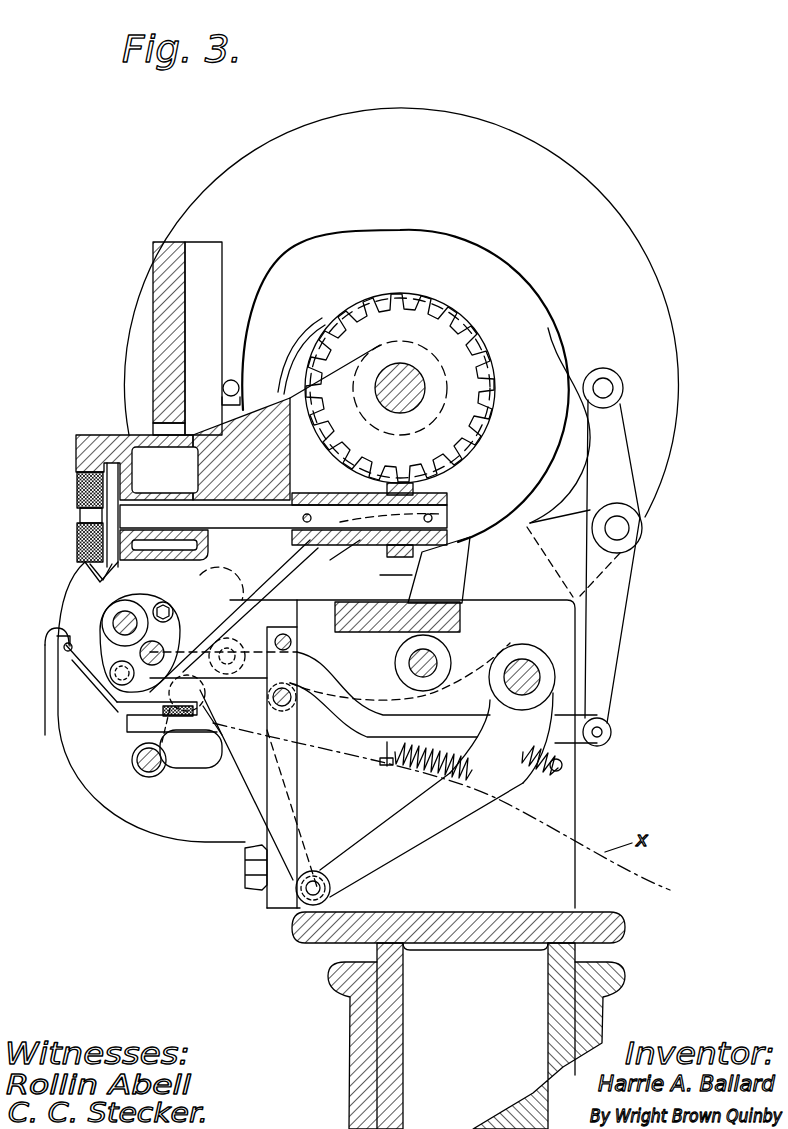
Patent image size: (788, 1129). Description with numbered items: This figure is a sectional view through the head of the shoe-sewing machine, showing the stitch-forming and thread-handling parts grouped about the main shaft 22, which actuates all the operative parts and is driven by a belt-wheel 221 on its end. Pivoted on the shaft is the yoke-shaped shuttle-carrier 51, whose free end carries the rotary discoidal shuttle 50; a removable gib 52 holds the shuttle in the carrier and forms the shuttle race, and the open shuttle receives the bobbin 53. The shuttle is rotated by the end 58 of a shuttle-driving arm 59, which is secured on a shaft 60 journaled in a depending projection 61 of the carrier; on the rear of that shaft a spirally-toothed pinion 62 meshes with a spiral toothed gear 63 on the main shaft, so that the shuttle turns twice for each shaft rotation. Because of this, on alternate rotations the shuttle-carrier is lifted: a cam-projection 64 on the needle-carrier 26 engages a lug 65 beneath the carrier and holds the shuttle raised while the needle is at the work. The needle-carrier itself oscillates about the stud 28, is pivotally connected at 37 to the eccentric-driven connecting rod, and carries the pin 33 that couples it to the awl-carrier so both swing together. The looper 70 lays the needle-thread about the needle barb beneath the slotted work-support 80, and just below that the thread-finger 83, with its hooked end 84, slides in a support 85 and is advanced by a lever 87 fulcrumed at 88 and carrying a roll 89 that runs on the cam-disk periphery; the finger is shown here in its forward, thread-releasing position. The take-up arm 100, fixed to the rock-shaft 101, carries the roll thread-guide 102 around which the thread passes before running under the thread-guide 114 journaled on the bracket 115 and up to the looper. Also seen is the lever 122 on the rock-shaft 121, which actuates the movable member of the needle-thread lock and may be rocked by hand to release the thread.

The belt-wheel 221 is at (605, 217).
The main shaft 22 is at (405, 390).
The spiral toothed gear 63 is at (470, 384).
The roll 89 is at (623, 381).
The fulcrum 88 is at (630, 528).
The lever 87 is at (607, 606).
The shuttle-carrier 51 is at (117, 433).
The removable gib 52 is at (78, 437).
The shuttle 50 is at (77, 472).
The bobbin 53 is at (88, 536).
The end of shuttle-driving arm 58 is at (95, 580).
The shuttle-driving arm 59 is at (110, 537).
The shaft 60 is at (250, 510).
The spirally-toothed pinion 62 is at (420, 497).
The depending projection 61 is at (344, 548).
The lever 122 is at (445, 577).
The lug 65 is at (140, 562).
The cam-projection 64 is at (173, 612).
The stud 28 is at (120, 618).
The work-support 80 is at (60, 632).
The hooked end 84 is at (64, 648).
The looper 70 is at (75, 663).
The pivotal connection 37 is at (118, 680).
The pin 33 is at (125, 712).
The needle-carrier 26 is at (226, 634).
The support 85 is at (292, 641).
The rock-shaft 121 is at (410, 658).
The rock-shaft 101 is at (560, 678).
The thread-finger 83 is at (225, 685).
The thread-guide 114 is at (140, 775).
The bracket 115 is at (170, 818).
The arm 100 is at (560, 787).
The thread-guide 102 is at (331, 890).